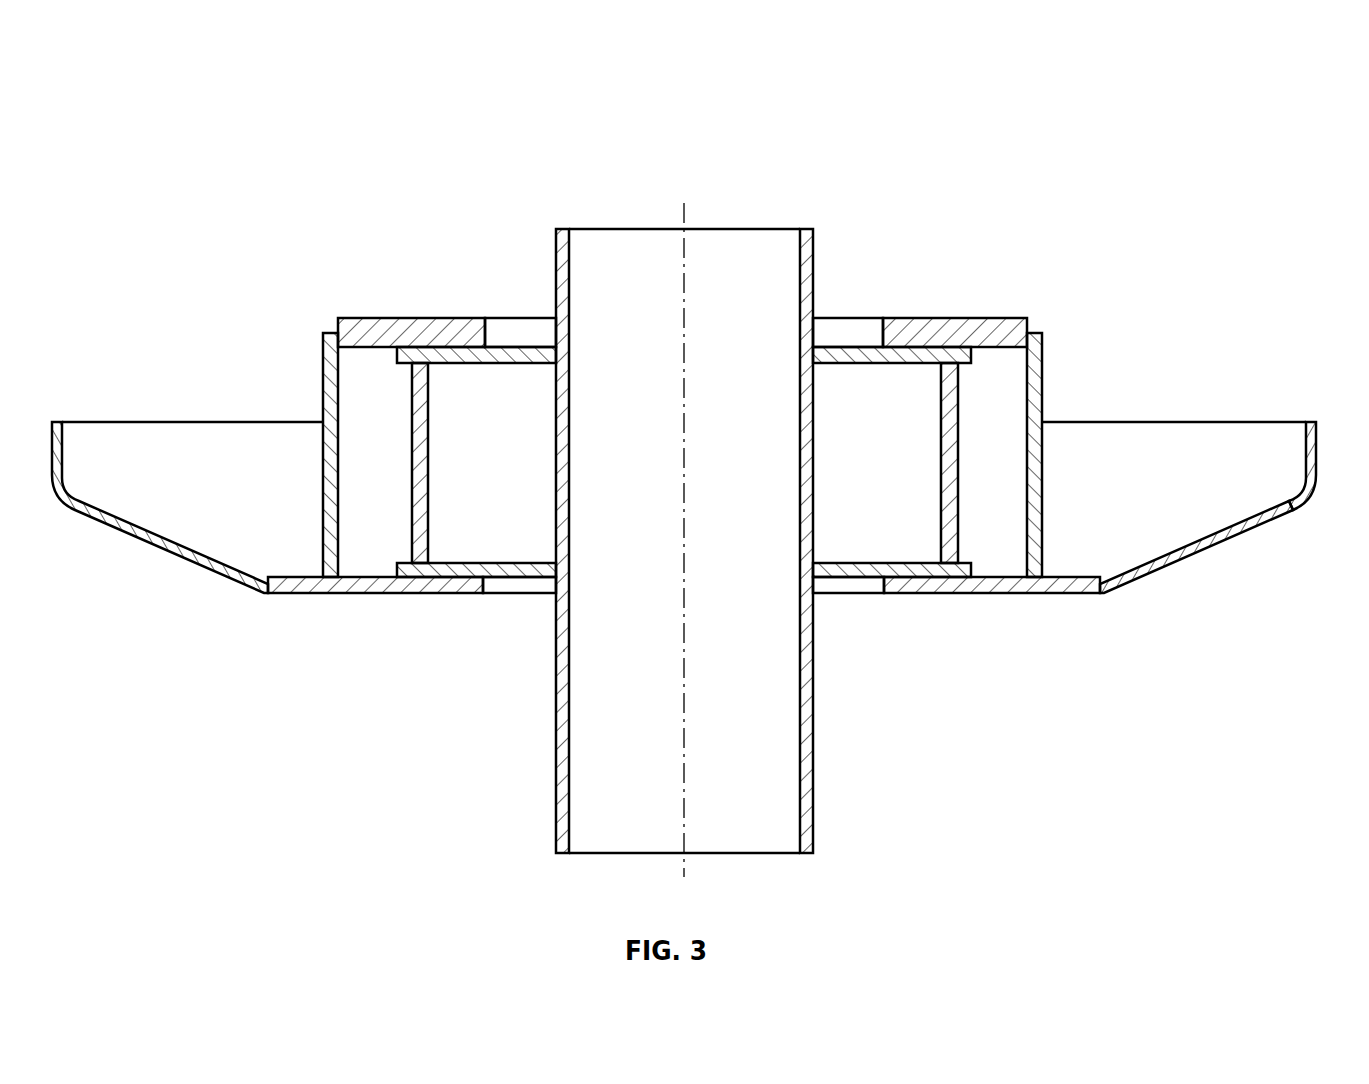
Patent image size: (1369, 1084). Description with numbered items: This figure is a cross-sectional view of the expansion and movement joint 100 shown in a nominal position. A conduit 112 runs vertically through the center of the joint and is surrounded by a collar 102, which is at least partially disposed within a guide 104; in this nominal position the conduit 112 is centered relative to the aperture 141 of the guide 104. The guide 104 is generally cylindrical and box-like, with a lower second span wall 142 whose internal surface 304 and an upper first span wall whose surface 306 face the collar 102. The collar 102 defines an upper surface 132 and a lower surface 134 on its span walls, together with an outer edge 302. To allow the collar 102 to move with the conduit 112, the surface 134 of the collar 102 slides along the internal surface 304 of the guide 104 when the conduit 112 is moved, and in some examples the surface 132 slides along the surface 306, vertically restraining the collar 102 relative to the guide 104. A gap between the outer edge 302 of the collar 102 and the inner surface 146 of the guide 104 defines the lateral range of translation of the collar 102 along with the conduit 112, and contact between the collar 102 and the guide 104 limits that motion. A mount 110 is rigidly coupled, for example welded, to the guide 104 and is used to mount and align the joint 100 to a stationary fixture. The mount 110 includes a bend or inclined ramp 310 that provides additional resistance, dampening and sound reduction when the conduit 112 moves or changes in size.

The expansion and movement joint 100 is at (1052, 82).
The collar 102 is at (920, 577).
The guide 104 is at (990, 333).
The mount 110 is at (1308, 437).
The conduit 112 is at (808, 265).
The surface 132 is at (455, 357).
The surface 134 is at (475, 577).
The aperture 141 is at (883, 337).
The second span wall 142 is at (428, 577).
The inner surface 146 is at (988, 347).
The outer edge 302 is at (972, 355).
The surface 304 is at (482, 577).
The surface 306 is at (372, 347).
The bend or inclined ramp 310 is at (1187, 560).